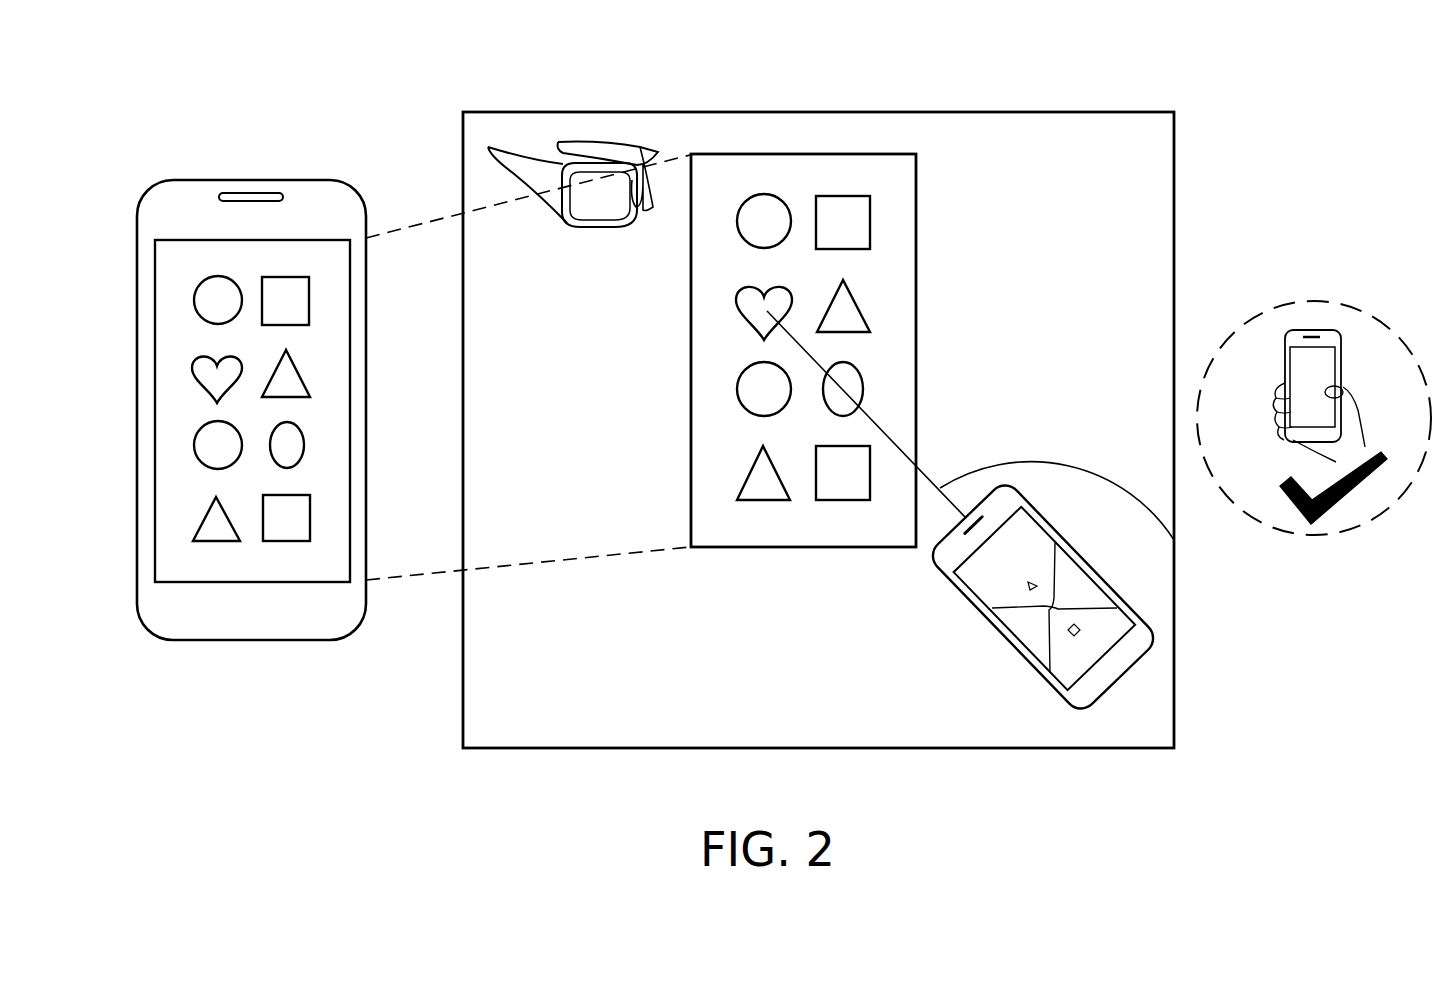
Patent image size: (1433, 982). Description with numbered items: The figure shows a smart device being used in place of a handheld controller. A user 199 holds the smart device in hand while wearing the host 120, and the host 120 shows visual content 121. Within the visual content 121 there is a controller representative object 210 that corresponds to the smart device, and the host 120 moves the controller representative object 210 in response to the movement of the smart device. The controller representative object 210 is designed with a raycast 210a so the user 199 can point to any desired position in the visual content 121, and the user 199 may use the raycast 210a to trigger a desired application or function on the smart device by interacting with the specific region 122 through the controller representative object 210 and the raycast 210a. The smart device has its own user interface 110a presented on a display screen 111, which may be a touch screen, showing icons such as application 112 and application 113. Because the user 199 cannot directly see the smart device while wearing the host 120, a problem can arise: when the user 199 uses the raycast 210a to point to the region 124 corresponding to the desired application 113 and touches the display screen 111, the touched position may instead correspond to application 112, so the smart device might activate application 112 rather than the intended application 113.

The user interface 110a is at (188, 331).
The display screen 111 is at (178, 492).
The application 112 is at (285, 443).
The application 113 is at (210, 380).
The host 120 is at (632, 145).
The visual content 121 is at (1040, 145).
The specific region 122 is at (808, 153).
The region 124 is at (752, 320).
The user 199 is at (1358, 395).
The controller representative object 210 is at (1143, 657).
The raycast 210a is at (1174, 540).